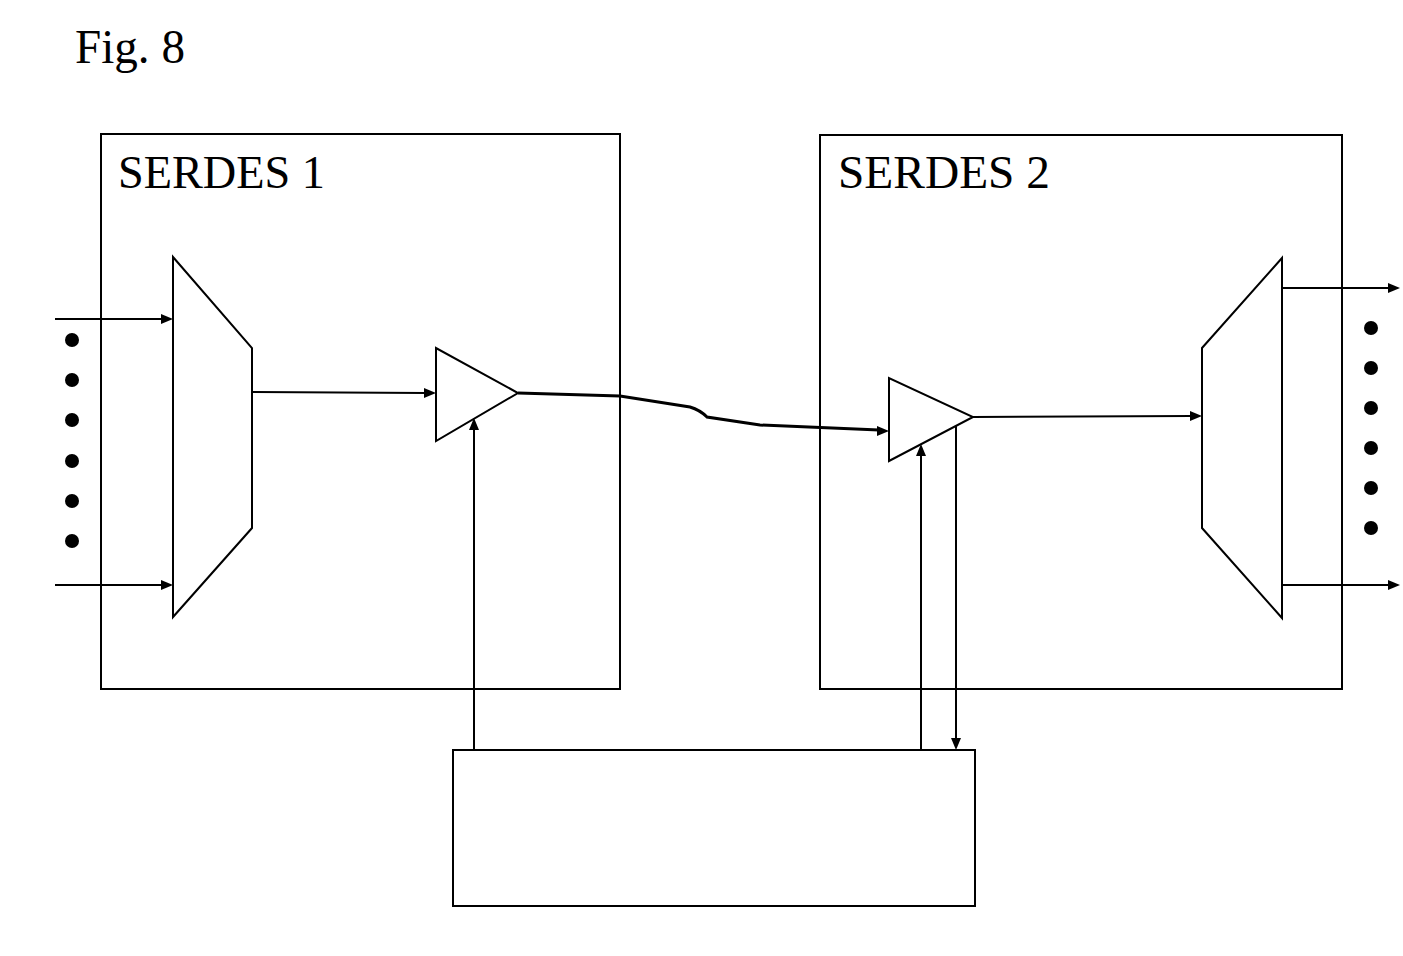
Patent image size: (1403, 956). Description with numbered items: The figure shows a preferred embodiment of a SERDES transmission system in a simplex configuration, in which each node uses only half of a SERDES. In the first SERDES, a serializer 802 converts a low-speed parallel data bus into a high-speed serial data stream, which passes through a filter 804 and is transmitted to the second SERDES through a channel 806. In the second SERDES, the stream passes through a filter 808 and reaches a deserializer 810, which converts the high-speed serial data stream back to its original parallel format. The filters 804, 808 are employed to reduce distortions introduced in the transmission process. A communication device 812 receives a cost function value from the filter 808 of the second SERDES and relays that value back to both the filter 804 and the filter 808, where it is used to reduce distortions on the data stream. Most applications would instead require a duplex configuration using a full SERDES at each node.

The serializer 802 is at (234, 333).
The filter 804 is at (453, 350).
The channel 806 is at (760, 423).
The filter 808 is at (922, 390).
The deserializer 810 is at (1215, 330).
The communication device 812 is at (714, 828).